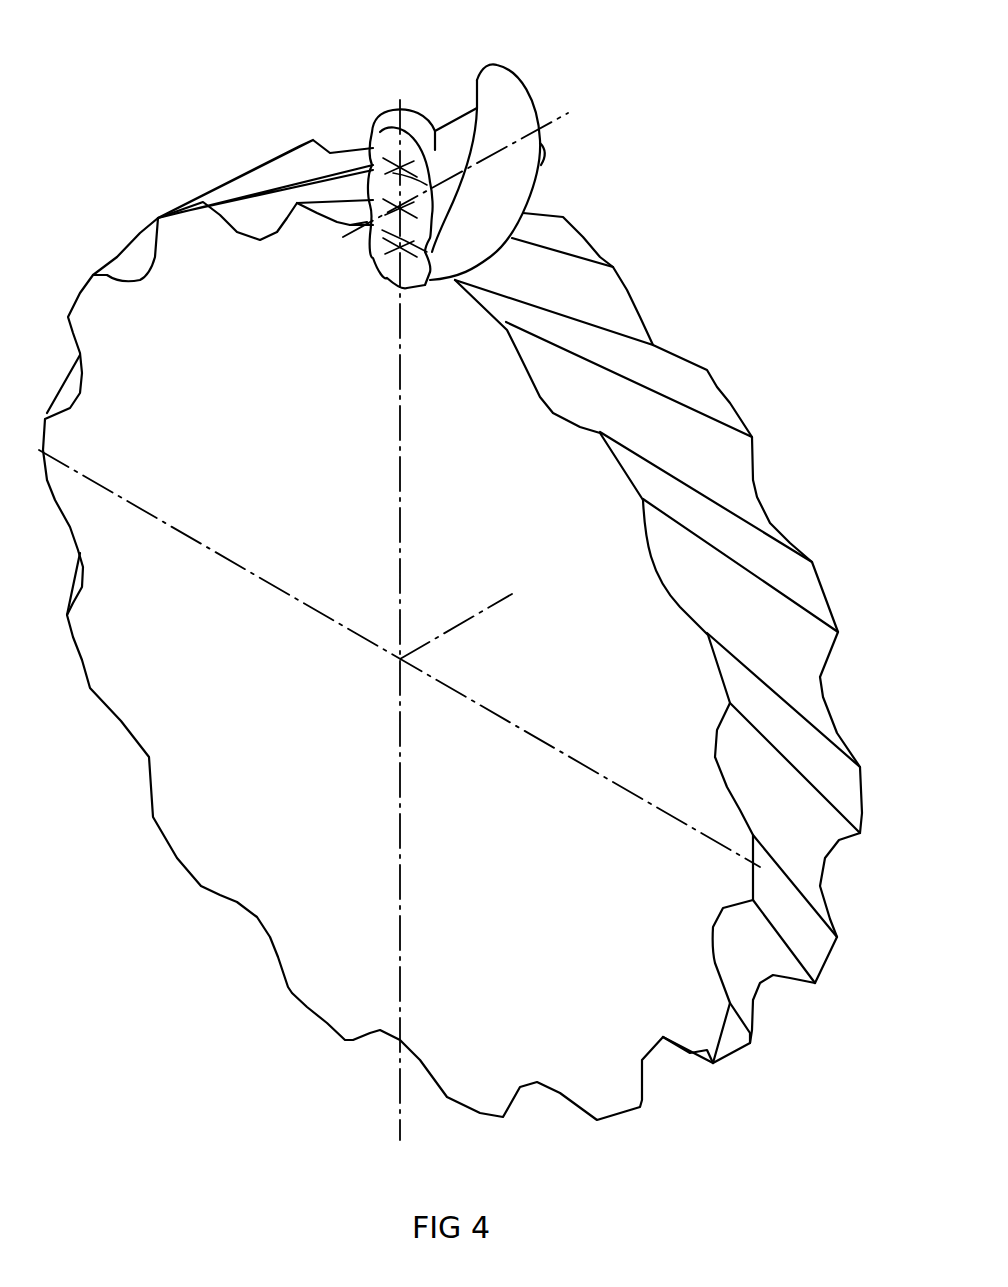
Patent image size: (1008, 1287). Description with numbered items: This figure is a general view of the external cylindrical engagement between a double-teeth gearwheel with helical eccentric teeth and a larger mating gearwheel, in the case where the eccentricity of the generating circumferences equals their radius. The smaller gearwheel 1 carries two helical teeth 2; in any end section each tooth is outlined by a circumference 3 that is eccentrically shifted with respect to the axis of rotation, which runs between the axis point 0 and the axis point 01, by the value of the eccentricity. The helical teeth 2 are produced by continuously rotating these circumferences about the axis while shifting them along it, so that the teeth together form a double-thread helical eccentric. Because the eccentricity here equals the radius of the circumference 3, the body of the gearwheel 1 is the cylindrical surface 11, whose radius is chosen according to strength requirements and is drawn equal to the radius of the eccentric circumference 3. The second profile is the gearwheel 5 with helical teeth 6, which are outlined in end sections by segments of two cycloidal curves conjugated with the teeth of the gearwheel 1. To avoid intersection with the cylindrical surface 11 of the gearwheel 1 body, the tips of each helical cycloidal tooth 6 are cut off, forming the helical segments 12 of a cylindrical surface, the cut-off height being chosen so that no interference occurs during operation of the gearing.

The gearwheel 1 is at (563, 65).
The helical teeth 2 is at (423, 118).
The circumference 3 is at (379, 130).
The cylindrical surface 11 is at (461, 158).
The axis of gearwheel rotation 01 is at (479, 163).
The axis of gearwheel rotation 0 is at (370, 223).
The gearwheel 5 is at (795, 403).
The helical teeth 6 is at (661, 415).
The helical segments of a cylindrical surface 12 is at (743, 543).